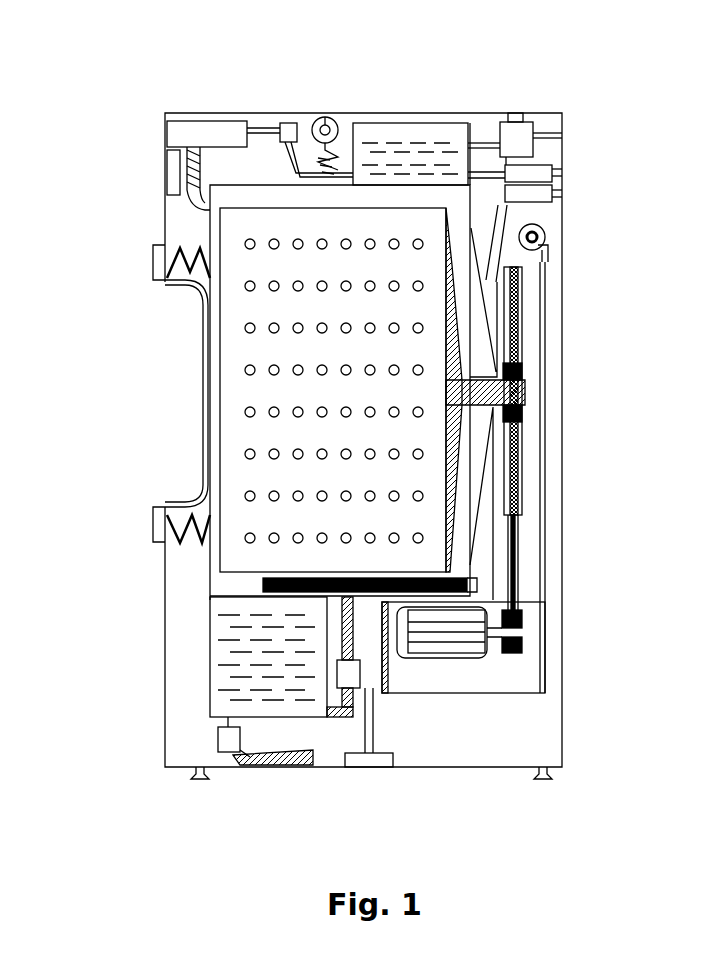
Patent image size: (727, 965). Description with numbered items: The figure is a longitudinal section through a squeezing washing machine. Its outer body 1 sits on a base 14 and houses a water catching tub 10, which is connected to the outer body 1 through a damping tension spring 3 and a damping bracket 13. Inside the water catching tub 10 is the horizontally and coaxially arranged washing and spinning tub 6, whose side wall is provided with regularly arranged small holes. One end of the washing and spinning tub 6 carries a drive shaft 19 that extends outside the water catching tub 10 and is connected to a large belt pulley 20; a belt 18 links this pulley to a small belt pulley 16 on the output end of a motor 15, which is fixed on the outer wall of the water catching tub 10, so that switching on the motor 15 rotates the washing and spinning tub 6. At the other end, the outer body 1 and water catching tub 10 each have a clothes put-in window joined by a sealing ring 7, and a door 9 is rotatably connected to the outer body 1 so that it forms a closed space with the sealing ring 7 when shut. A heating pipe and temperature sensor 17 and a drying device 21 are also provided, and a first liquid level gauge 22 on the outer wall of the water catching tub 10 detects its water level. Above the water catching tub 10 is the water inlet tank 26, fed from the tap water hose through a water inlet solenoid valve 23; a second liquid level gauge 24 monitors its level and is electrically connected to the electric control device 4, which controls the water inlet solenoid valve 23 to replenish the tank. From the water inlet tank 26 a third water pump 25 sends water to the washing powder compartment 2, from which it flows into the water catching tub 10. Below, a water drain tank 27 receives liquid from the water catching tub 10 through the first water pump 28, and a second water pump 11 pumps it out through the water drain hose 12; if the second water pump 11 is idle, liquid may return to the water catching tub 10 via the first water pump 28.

The outer body 1 is at (312, 415).
The washing powder compartment 2 is at (171, 142).
The damping tension spring 3 is at (121, 178).
The electric control device 4 is at (204, 197).
The washing and spinning tub 6 is at (136, 394).
The sealing ring 7 is at (254, 390).
The door 9 is at (136, 393).
The water catching tub 10 is at (278, 361).
The second water pump 11 is at (149, 723).
The water drain hose 12 is at (221, 727).
The damping bracket 13 is at (300, 779).
The base 14 is at (181, 792).
The motor 15 is at (537, 647).
The small belt pulley 16 is at (529, 477).
The heating pipe and temperature sensor 17 is at (470, 549).
The belt 18 is at (591, 454).
The drive shaft 19 is at (561, 341).
The large belt pulley 20 is at (590, 367).
The drying device 21 is at (598, 220).
The first liquid level gauge 22 is at (591, 170).
The water inlet solenoid valve 23 is at (572, 114).
The second liquid level gauge 24 is at (572, 140).
The third water pump 25 is at (478, 89).
The water inlet tank 26 is at (515, 109).
The water drain tank 27 is at (188, 657).
The first water pump 28 is at (204, 650).